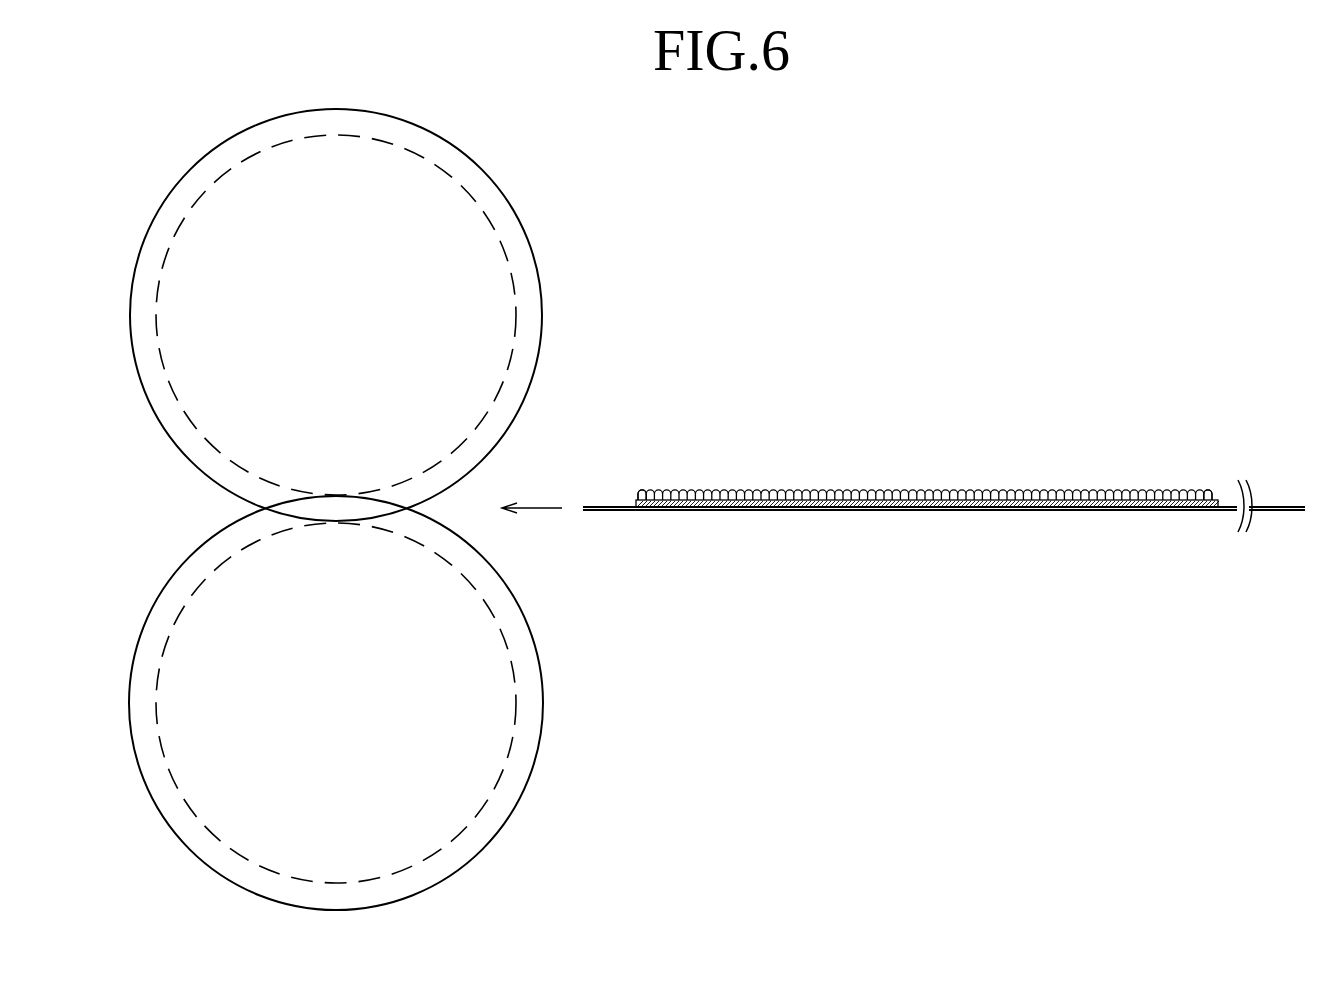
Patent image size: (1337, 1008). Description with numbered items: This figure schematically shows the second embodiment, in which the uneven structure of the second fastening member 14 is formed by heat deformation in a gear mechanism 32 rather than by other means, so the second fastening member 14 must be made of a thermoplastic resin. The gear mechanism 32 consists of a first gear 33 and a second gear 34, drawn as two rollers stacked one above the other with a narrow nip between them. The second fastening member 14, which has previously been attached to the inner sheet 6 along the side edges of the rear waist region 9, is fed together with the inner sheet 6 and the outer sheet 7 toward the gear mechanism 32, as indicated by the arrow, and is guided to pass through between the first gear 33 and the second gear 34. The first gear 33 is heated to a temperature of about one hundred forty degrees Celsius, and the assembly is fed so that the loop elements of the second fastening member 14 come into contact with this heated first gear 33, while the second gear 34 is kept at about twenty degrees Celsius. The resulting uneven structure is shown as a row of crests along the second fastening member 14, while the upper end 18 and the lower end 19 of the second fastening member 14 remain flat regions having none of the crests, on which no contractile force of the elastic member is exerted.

The gear mechanism 32 is at (333, 497).
The first gear 33 is at (480, 163).
The second gear 34 is at (480, 852).
The second fastening member 14 is at (955, 492).
The upper end 18 is at (643, 492).
The lower end 19 is at (1212, 490).
The rear waist region 9 is at (957, 482).
The inner sheet 6 is at (1283, 506).
The outer sheet 7 is at (1283, 511).